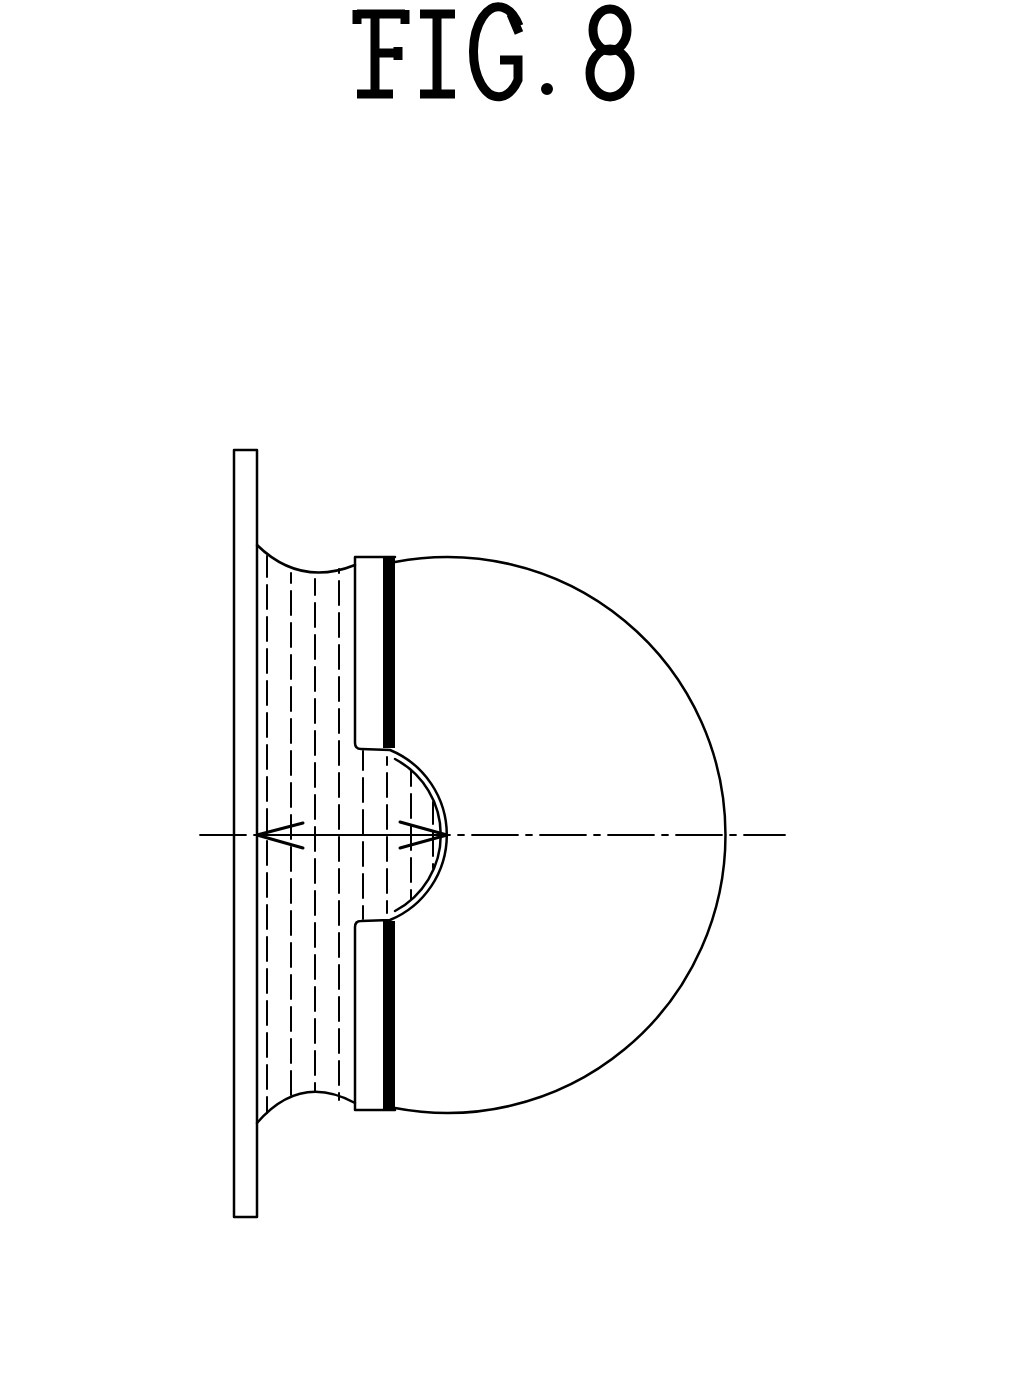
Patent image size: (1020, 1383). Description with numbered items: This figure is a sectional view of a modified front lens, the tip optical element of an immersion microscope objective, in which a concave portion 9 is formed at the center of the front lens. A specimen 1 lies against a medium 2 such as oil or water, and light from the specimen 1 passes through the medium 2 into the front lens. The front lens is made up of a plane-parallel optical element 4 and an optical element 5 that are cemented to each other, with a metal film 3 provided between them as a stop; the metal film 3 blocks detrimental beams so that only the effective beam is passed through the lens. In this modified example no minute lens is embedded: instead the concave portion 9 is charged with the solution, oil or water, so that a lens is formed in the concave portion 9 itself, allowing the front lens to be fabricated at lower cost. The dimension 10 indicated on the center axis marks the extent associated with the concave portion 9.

The specimen 1 is at (245, 1213).
The medium 2 is at (302, 589).
The metal film 3 is at (395, 622).
The plane-parallel optical element 4 is at (358, 1104).
The optical element 5 is at (490, 1082).
The concave portion 9 is at (415, 778).
The gap distance 10 is at (343, 840).